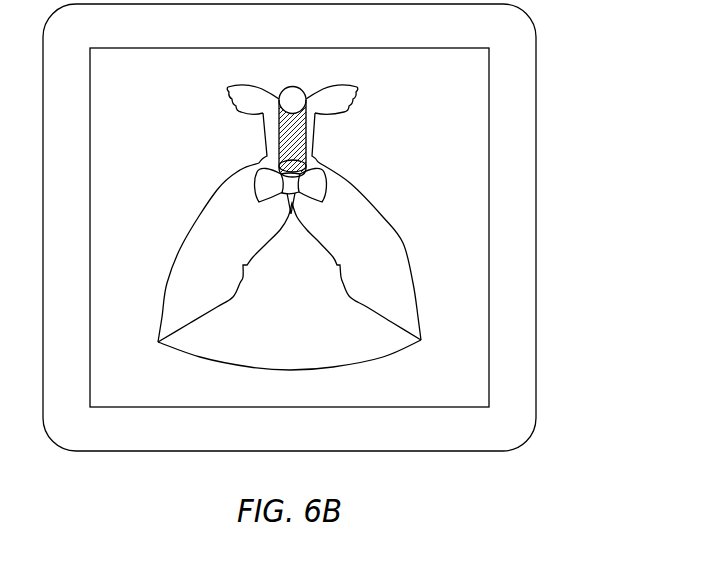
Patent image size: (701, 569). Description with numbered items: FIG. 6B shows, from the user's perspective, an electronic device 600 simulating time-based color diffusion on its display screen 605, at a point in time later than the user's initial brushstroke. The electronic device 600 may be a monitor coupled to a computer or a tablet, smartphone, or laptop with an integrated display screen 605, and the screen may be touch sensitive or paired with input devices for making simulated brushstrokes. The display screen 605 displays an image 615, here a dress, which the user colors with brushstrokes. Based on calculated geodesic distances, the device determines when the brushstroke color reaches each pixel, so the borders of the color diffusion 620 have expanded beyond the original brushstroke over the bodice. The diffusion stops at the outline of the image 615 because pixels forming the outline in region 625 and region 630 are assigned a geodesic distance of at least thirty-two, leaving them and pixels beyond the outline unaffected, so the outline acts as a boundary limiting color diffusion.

The electronic device 600 is at (537, 229).
The display screen 605 is at (489, 343).
The image 615 is at (327, 90).
The color diffusion 620 is at (312, 122).
The region 625 is at (288, 87).
The region 630 is at (310, 172).